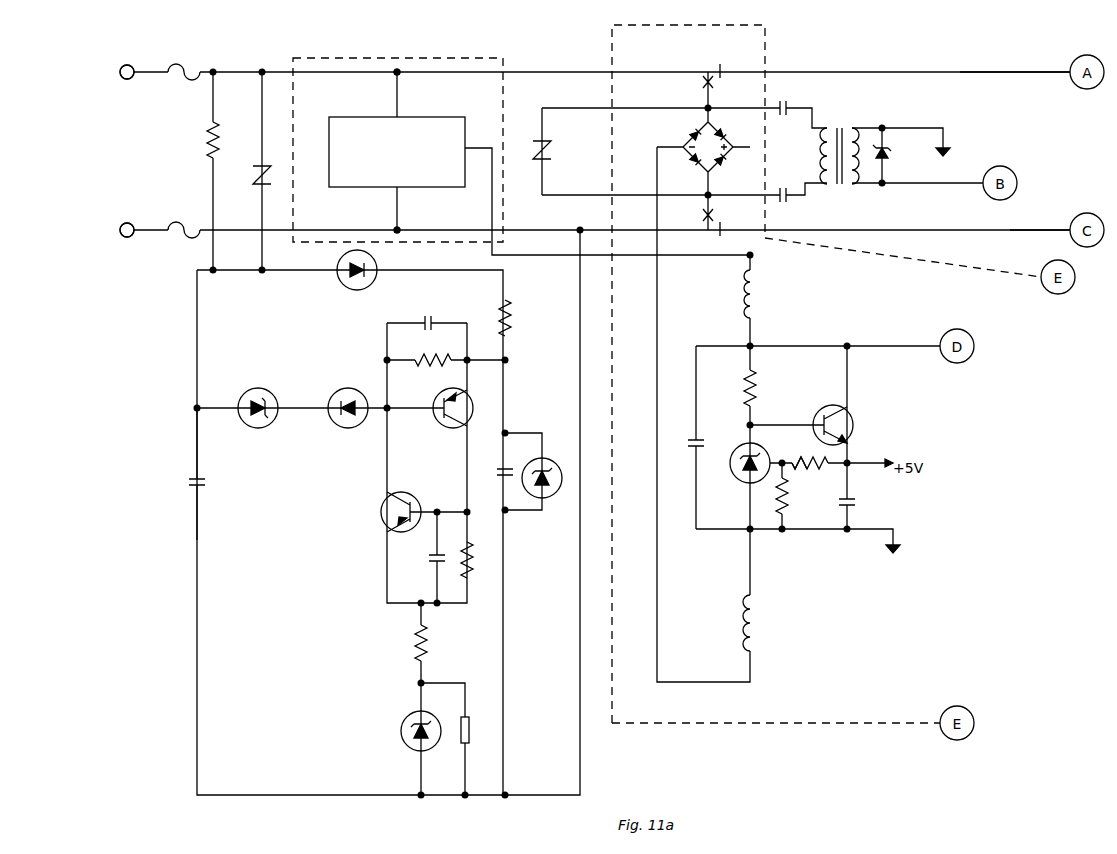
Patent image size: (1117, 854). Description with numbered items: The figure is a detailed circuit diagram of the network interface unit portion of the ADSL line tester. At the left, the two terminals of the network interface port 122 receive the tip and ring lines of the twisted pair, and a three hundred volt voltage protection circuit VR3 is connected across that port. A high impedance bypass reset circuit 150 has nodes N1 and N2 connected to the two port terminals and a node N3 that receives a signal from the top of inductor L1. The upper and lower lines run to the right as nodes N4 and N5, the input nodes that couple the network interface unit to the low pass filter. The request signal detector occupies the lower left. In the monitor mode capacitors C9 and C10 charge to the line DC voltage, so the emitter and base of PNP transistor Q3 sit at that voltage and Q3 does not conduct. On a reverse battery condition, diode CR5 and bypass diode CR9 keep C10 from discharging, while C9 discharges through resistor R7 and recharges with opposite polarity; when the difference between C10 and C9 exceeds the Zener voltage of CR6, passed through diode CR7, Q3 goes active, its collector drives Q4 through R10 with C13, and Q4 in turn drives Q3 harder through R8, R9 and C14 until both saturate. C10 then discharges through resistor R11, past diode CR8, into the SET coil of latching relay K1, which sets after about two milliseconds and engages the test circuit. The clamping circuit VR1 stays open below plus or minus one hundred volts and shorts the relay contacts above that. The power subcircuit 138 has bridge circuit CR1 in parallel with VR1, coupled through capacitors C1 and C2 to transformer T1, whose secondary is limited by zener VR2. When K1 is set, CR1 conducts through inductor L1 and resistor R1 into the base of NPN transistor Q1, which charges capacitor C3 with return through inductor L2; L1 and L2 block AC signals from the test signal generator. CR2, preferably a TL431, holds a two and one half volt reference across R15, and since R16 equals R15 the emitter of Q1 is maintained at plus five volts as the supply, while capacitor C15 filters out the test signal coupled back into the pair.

The network interface port 122 is at (122, 60).
The high impedance bypass reset circuit 150 is at (293, 58).
The power subcircuit 138 is at (832, 725).
The node N1 is at (392, 80).
The node N2 is at (392, 226).
The node N3 is at (482, 152).
The input node N4 is at (997, 70).
The input node N5 is at (1049, 228).
The resistor R7 is at (224, 140).
The 300 V voltage protection circuit VR3 is at (245, 194).
The diode CR5 is at (357, 281).
The Zener diode CR6 is at (258, 421).
The diode CR7 is at (348, 421).
The capacitor C9 is at (210, 486).
The capacitor C14 is at (431, 314).
The resistor R9 is at (430, 373).
The resistor R8 is at (517, 318).
The PNP transistor Q3 is at (465, 408).
The transistor Q4 is at (413, 512).
The capacitor C10 is at (495, 462).
The bypass diode CR9 is at (547, 489).
The capacitor C13 is at (422, 557).
The resistor R10 is at (482, 560).
The resistor R11 is at (437, 643).
The diode CR8 is at (406, 731).
The latching relay K1 is at (461, 739).
The clamping circuit VR1 is at (557, 151).
The bridge circuit CR1 is at (703, 151).
The capacitor C1 is at (784, 123).
The capacitor C2 is at (795, 206).
The transformer T1 is at (839, 142).
The zener VR2 is at (897, 155).
The inductor L1 is at (758, 294).
The inductor L2 is at (761, 623).
The resistor R1 is at (764, 388).
The capacitor C15 is at (686, 437).
The NPN transistor Q1 is at (814, 425).
The shunt regulator CR2 is at (741, 473).
The resistor R16 is at (802, 454).
The resistor R15 is at (798, 496).
The capacitor C3 is at (860, 501).